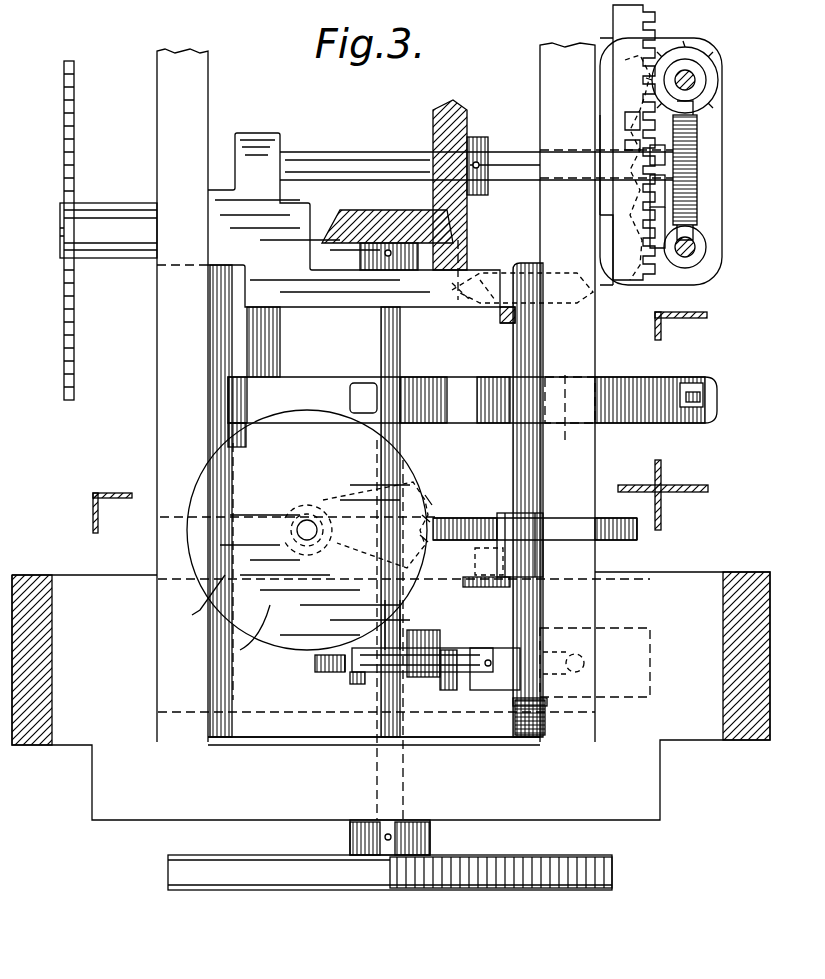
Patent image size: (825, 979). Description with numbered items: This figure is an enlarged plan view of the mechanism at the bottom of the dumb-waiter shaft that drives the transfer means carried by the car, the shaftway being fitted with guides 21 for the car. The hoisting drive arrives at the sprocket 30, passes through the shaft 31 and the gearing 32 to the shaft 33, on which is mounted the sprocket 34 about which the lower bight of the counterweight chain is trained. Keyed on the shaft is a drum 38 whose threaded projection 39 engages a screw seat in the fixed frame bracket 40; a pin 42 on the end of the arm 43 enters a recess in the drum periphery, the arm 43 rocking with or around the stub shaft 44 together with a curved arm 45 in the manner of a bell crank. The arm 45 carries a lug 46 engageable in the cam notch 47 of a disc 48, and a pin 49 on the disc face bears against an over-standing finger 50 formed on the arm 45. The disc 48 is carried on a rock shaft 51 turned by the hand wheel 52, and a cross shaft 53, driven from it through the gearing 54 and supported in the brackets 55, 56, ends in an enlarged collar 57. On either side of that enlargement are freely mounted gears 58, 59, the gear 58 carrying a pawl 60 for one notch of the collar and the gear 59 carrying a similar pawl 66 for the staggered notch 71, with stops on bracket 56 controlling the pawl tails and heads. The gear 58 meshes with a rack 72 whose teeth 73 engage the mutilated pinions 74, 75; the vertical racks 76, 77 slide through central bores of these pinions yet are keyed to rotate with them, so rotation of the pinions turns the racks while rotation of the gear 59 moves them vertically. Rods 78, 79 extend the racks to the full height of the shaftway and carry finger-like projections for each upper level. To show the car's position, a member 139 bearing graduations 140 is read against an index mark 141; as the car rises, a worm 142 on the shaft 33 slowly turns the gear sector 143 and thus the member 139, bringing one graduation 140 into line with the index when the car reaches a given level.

The guides 21 is at (93, 518).
The sprocket 30 is at (64, 328).
The shaft 31 is at (312, 226).
The gearing 32 is at (463, 310).
The shaft 33 is at (545, 626).
The sprocket 34 is at (690, 405).
The drum 38 is at (456, 648).
The threaded projection 39 is at (521, 722).
The frame bracket 40 is at (331, 737).
The pin 42 is at (590, 669).
The arm 43 is at (540, 680).
The stub shaft 44 is at (480, 588).
The curved arm 45 is at (400, 640).
The lug 46 is at (446, 690).
The cam notch 47 is at (425, 672).
The disc 48 is at (315, 670).
The pin 49 is at (350, 680).
The over-standing finger 50 is at (330, 668).
The rock shaft 51 is at (381, 330).
The hand wheel 52 is at (319, 890).
The cross shaft 53 is at (350, 164).
The gearing 54 is at (430, 208).
The bracket 55 is at (262, 143).
The bracket 56 is at (722, 219).
The collar 57 is at (698, 133).
The gear 58 is at (624, 283).
The gear 59 is at (697, 186).
The pawl 60 is at (625, 125).
The pawl 66 is at (697, 199).
The notch 71 is at (665, 157).
The rack 72 is at (615, 98).
The teeth 73 is at (645, 24).
The mutilated pinion 74 is at (712, 50).
The mutilated pinion 75 is at (652, 292).
The vertical rack 76 is at (704, 85).
The vertical rack 77 is at (700, 260).
The rod 78 is at (695, 80).
The rod 79 is at (695, 247).
The member 139 is at (307, 530).
The graduations 140 is at (235, 615).
The index mark 141 is at (217, 612).
The worm 142 is at (474, 520).
The gear sector 143 is at (426, 493).